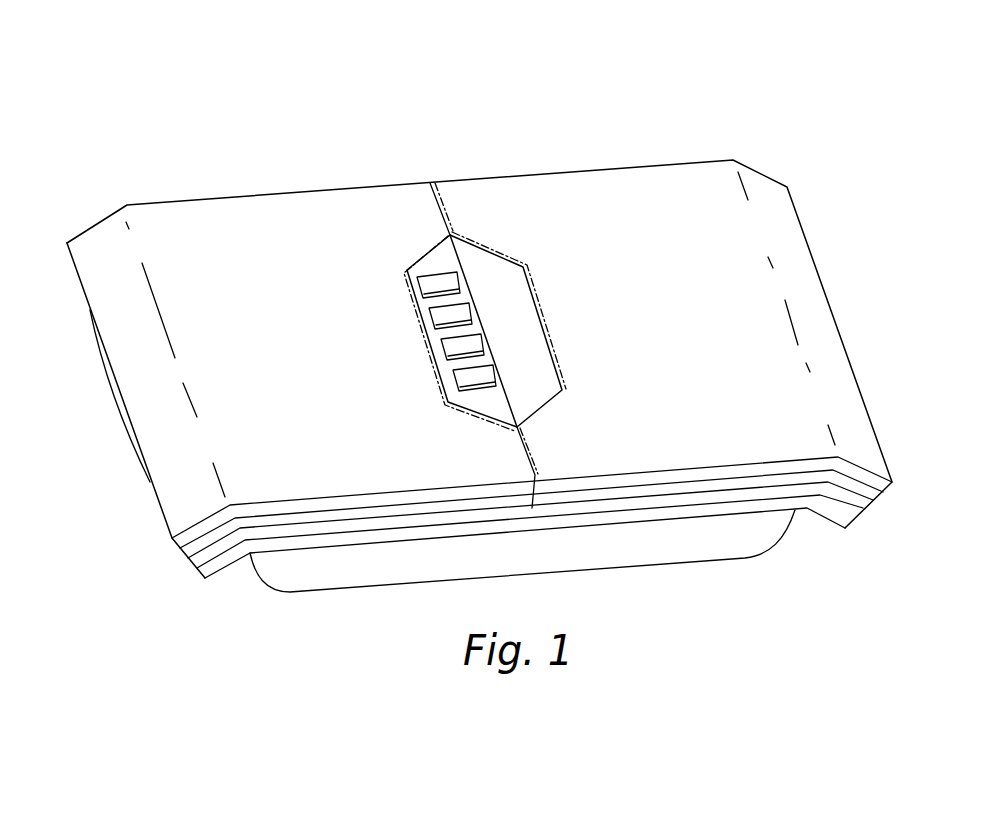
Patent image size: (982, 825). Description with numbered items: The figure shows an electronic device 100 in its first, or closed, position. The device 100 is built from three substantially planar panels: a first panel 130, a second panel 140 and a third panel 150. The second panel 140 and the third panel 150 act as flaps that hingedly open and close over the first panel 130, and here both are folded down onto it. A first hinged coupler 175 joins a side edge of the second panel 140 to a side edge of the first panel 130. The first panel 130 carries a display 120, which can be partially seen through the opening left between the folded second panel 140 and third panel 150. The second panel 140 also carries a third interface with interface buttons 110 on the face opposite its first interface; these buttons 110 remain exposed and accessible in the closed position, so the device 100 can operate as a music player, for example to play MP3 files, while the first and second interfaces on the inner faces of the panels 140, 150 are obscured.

The electronic device 100 is at (141, 96).
The interface buttons 110 is at (467, 380).
The display 120 is at (498, 282).
The first substantially planar panel 130 is at (307, 563).
The second substantially planar panel 140 is at (245, 333).
The third substantially planar panel 150 is at (687, 257).
The first hinged coupler 175 is at (122, 417).